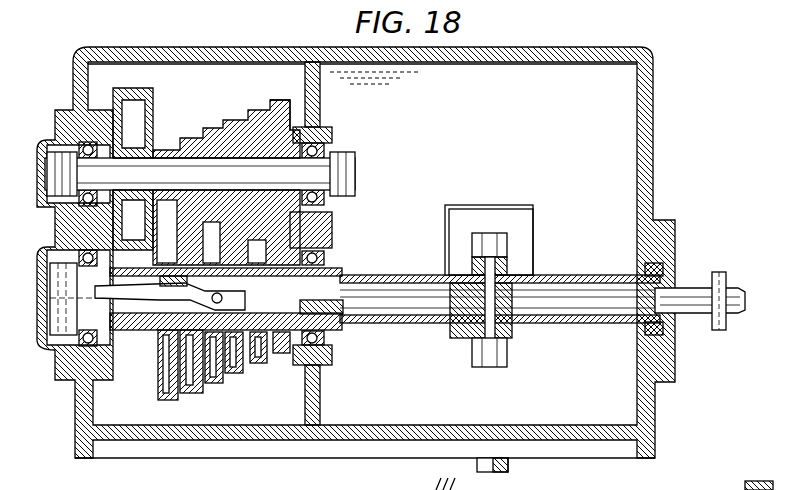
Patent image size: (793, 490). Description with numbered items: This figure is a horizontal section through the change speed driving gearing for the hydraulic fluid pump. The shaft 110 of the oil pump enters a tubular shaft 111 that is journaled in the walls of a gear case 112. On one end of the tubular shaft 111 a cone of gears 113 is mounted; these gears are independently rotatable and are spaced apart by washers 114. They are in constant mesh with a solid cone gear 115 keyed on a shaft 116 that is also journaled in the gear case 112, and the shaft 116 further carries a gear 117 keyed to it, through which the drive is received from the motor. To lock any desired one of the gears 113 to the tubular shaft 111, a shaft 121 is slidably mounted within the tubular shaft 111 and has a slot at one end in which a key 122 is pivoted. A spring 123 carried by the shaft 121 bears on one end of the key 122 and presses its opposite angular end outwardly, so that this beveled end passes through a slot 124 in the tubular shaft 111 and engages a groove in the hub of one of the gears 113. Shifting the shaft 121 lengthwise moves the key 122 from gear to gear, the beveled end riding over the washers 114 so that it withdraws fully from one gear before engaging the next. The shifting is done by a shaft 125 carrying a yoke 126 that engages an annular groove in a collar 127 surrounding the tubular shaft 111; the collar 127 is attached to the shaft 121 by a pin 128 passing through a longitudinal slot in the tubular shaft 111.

The shaft 110 is at (740, 294).
The tubular shaft 111 is at (687, 276).
The gear case 112 is at (647, 141).
The cone of gears 113 is at (177, 403).
The washers 114 is at (180, 335).
The solid cone gear 115 is at (232, 137).
The shaft 116 is at (180, 172).
The gear 117 is at (130, 97).
The shaft 121 is at (397, 303).
The key 122 is at (188, 292).
The spring 123 is at (276, 268).
The slot 124 is at (288, 247).
The shaft 125 is at (507, 466).
The yoke 126 is at (508, 362).
The collar 127 is at (507, 262).
The pin 128 is at (470, 287).